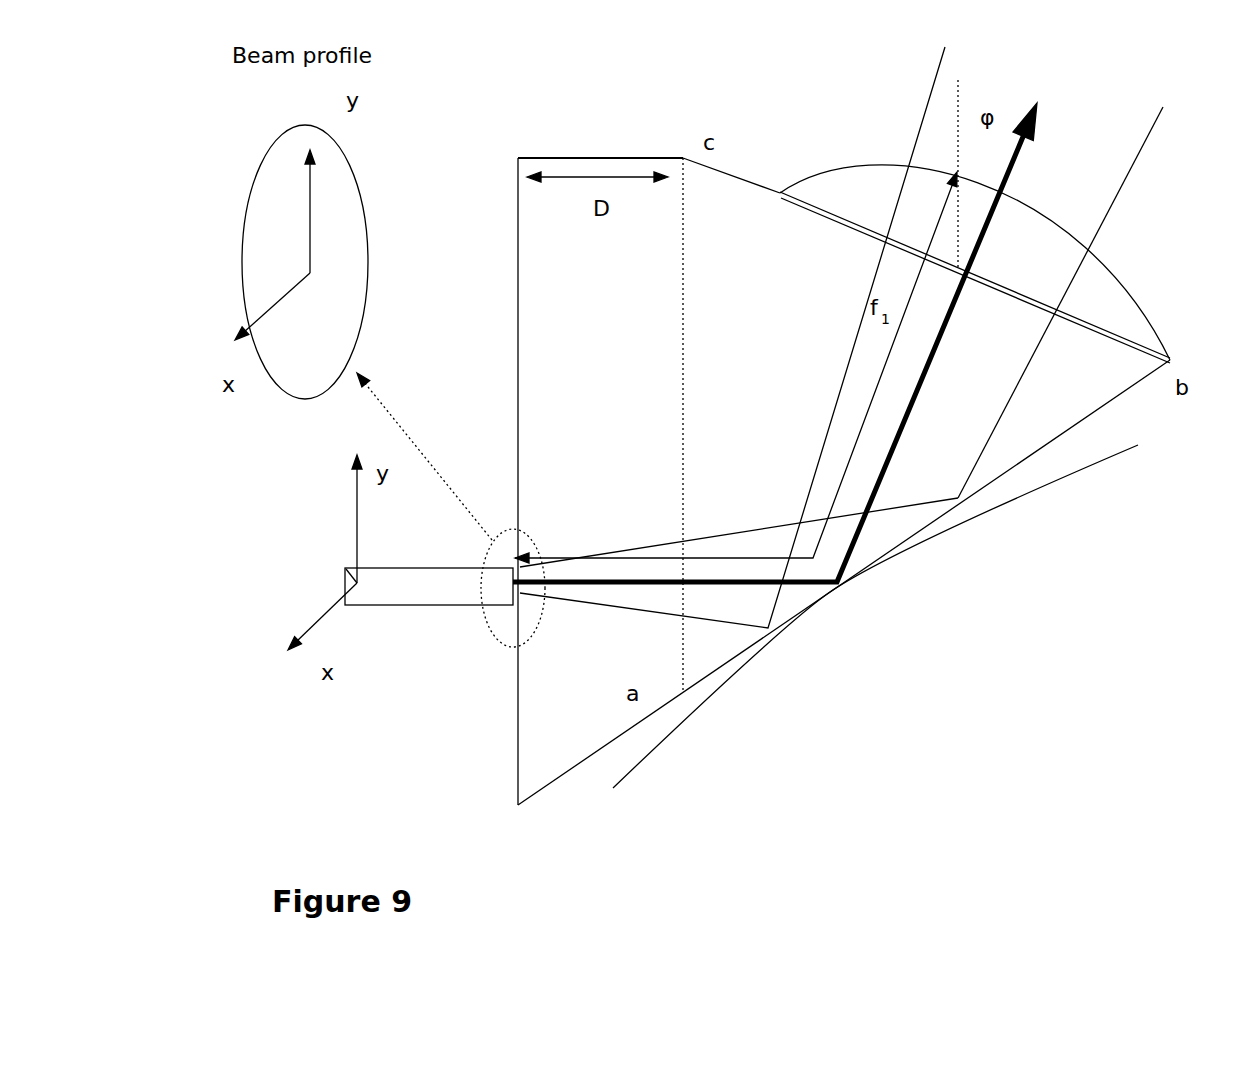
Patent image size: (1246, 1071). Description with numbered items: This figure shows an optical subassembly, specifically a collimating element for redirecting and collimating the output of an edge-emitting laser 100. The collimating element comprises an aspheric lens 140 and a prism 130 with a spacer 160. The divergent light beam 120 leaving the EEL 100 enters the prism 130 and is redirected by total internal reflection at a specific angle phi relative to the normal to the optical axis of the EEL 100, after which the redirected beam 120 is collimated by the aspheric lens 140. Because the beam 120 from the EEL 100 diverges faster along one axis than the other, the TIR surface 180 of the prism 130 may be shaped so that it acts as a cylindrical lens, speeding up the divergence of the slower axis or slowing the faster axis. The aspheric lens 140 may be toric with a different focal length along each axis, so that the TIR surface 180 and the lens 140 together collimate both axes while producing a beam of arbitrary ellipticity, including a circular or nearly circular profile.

The edge-emitting laser 100 is at (421, 600).
The divergent light beam 120 is at (775, 342).
The prism 130 is at (1038, 417).
The aspheric lens 140 is at (1095, 303).
The spacer 160 is at (682, 134).
The TIR surface 180 is at (860, 567).